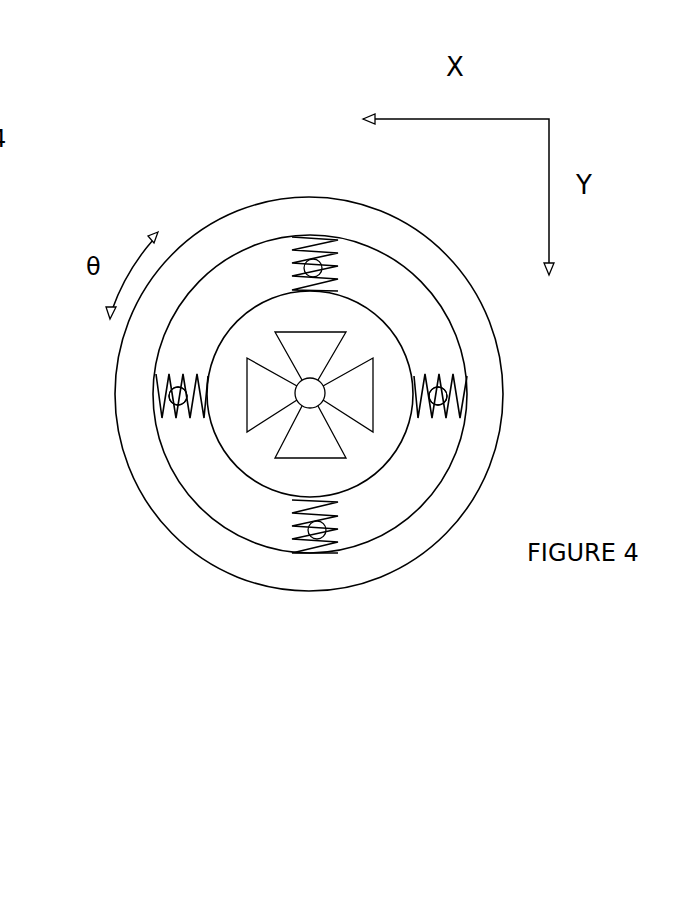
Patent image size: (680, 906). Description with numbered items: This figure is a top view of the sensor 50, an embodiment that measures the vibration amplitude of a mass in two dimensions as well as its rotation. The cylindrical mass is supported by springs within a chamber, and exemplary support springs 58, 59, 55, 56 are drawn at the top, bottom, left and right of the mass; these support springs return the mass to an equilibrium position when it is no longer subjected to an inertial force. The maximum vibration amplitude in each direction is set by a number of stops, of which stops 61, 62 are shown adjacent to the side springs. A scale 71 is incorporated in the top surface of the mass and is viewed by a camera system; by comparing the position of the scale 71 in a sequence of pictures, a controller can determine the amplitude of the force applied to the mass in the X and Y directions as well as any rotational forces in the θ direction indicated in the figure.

The sensor 50 is at (245, 85).
The scale 71 is at (311, 444).
The support spring 59 is at (289, 242).
The support spring 58 is at (311, 555).
The stop 61 is at (173, 376).
The support spring 55 is at (193, 420).
The stop 62 is at (438, 375).
The support spring 56 is at (425, 420).